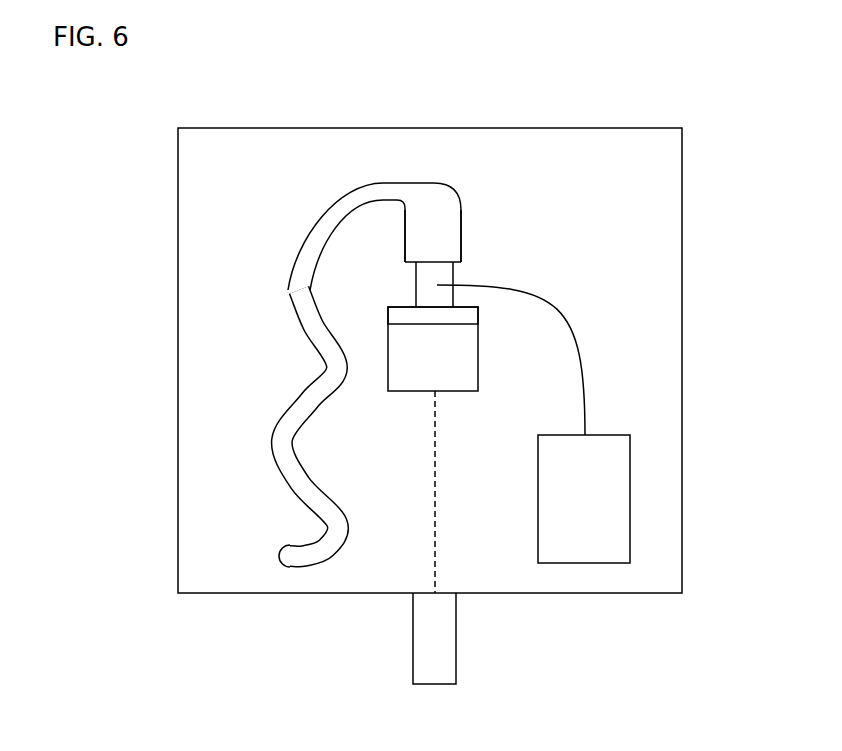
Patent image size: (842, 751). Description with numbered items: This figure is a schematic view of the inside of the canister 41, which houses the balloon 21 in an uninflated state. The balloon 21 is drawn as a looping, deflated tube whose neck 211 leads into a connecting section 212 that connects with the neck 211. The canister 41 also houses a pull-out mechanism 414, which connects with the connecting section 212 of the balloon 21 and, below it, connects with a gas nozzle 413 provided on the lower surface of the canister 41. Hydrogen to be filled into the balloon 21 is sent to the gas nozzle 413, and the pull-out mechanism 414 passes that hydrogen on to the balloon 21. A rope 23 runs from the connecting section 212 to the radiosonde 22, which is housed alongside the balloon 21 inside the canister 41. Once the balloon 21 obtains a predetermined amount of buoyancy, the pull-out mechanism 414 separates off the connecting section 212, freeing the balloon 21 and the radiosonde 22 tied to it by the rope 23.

The canister 41 is at (638, 128).
The balloon 21 is at (318, 211).
The neck 211 is at (463, 243).
The connecting section 212 is at (480, 313).
The pull-out mechanism 414 is at (480, 358).
The rope 23 is at (577, 301).
The radiosonde 22 is at (607, 435).
The gas nozzle 413 is at (457, 640).